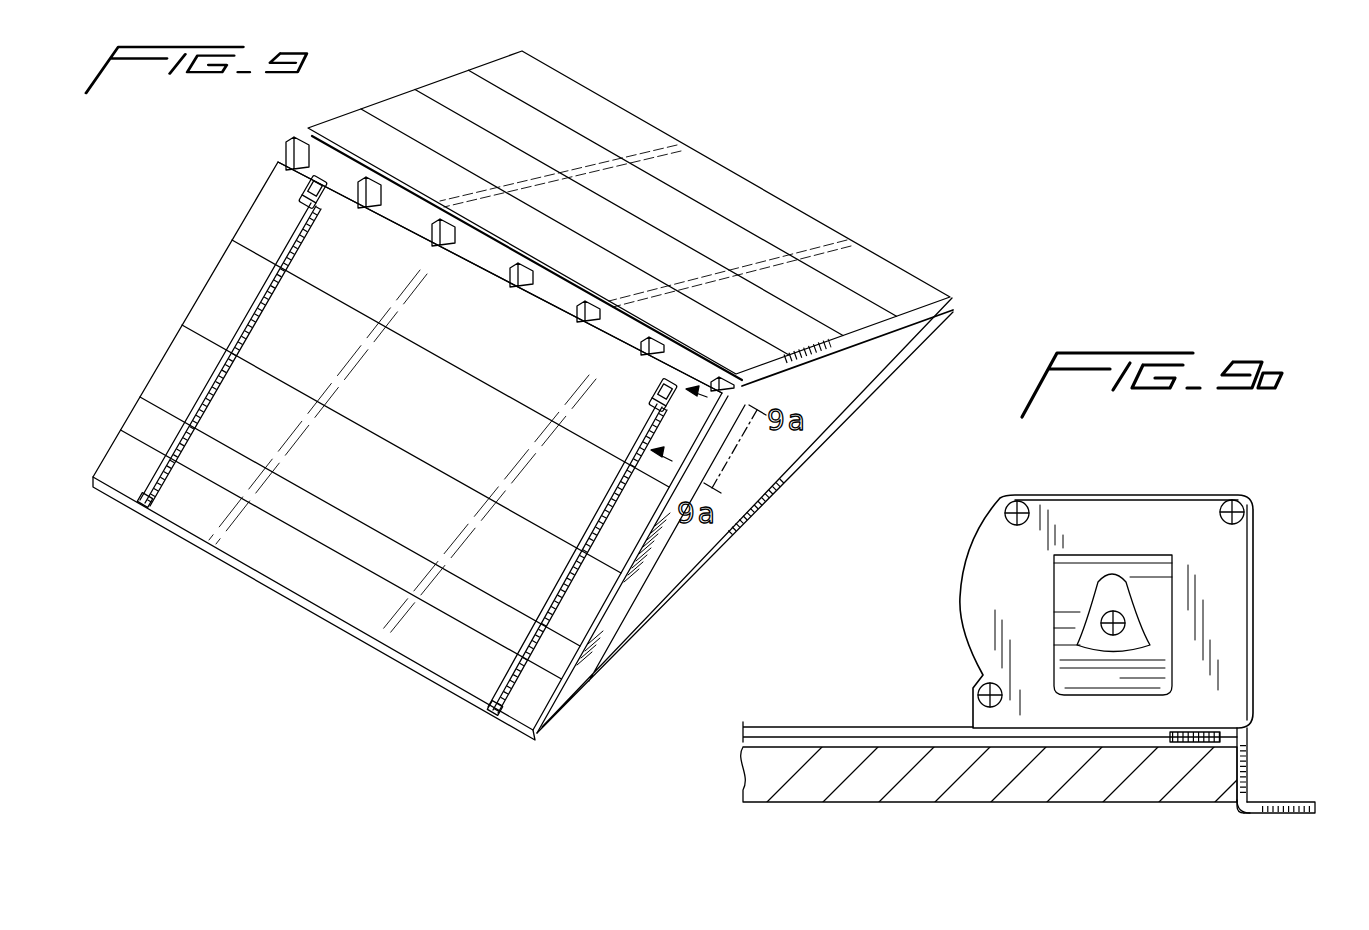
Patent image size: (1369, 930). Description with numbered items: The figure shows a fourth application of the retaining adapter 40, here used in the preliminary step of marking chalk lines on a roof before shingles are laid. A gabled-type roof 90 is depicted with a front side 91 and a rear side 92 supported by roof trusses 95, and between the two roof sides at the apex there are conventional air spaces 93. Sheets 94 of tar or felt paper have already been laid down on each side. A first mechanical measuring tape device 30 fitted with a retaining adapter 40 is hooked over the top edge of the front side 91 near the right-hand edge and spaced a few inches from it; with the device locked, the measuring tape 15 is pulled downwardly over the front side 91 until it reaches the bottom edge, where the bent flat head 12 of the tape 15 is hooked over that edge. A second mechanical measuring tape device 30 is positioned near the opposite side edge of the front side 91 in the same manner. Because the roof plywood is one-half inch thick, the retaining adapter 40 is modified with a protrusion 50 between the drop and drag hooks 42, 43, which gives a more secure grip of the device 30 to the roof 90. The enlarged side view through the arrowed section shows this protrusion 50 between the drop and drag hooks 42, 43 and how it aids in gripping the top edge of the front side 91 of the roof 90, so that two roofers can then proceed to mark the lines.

In FIG. 9, the bent flat head 12 is at (141, 501).
In FIG. 9, the measuring tape 15 is at (252, 316).
In FIG. 9a, the measuring tape 15 is at (835, 727).
In FIG. 9, the mechanical measuring tape device 30 is at (323, 203).
In FIG. 9a, the mechanical measuring tape device 30 is at (1240, 605).
In FIG. 9a, the retaining adapter 40 is at (1268, 785).
In FIG. 9a, the drop hook 42 is at (1245, 763).
In FIG. 9a, the drag hook 43 is at (1297, 815).
In FIG. 9a, the protrusion 50 is at (1230, 811).
In FIG. 9, the roof 90 is at (188, 182).
In FIG. 9, the front side 91 is at (160, 356).
In FIG. 9a, the front side 91 is at (867, 790).
In FIG. 9, the rear side 92 is at (451, 76).
In FIG. 9, the air spaces 93 is at (300, 163).
In FIG. 9, the sheets of tar or felt paper 94 is at (236, 230).
In FIG. 9, the roof trusses 95 is at (300, 128).